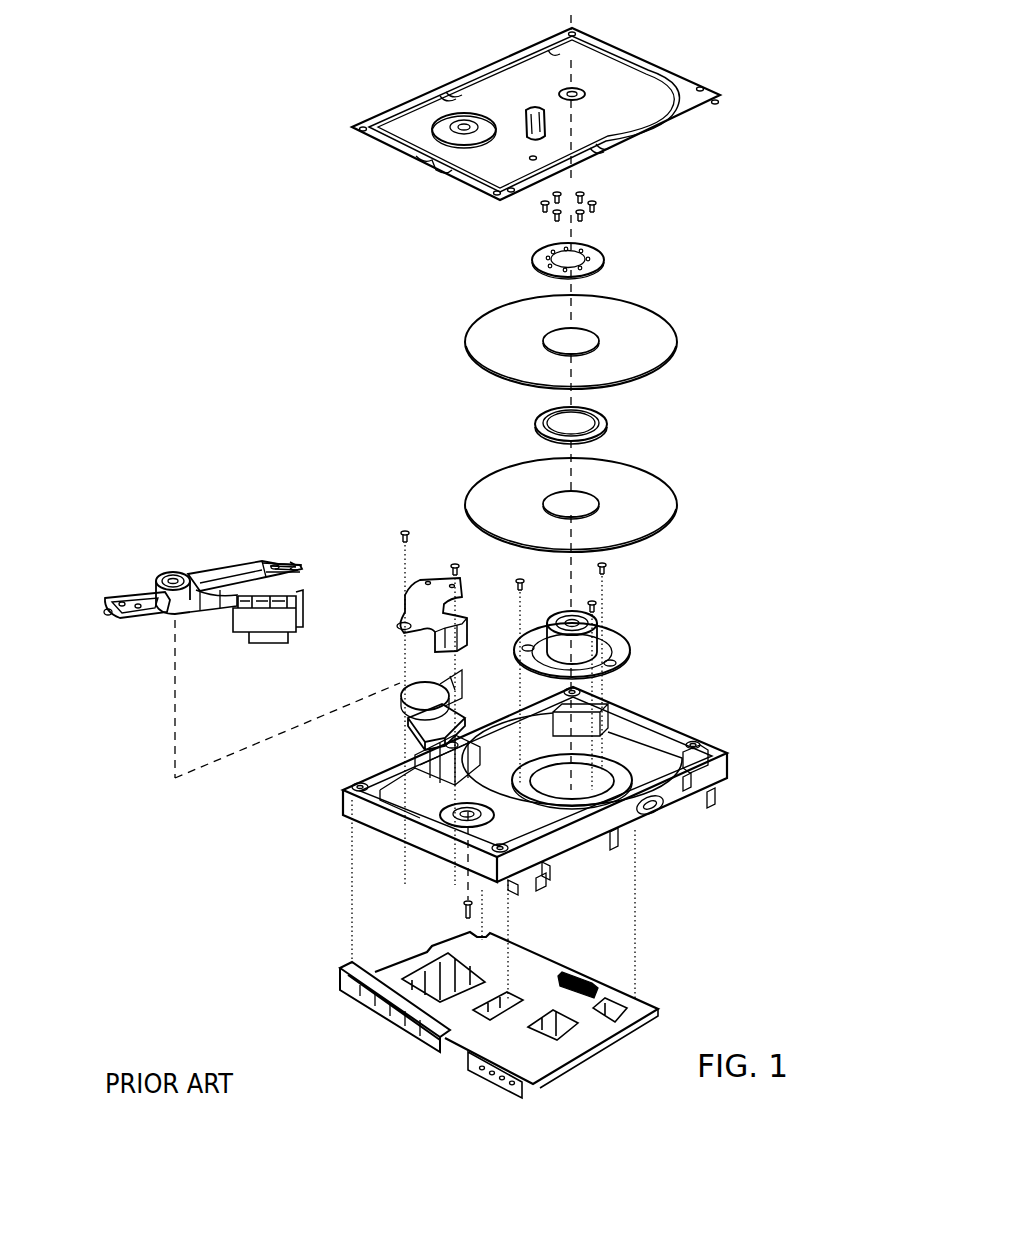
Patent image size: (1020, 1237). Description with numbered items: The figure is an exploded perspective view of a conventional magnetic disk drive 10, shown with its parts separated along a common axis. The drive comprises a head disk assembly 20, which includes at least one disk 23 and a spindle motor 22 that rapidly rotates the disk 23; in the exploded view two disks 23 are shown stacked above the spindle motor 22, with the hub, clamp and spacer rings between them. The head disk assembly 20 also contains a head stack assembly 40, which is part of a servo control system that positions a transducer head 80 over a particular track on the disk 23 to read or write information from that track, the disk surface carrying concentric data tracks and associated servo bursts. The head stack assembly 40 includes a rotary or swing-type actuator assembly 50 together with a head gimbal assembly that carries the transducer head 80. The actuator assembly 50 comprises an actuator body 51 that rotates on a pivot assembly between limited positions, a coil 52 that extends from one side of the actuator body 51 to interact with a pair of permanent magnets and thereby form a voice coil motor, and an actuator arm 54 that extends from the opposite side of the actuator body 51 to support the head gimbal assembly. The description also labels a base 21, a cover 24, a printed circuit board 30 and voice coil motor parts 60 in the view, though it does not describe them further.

The disk drive 10 is at (238, 132).
The head disk assembly 20 is at (765, 3).
The base 21 is at (713, 753).
The spindle motor 22 is at (618, 640).
The disk 23 is at (663, 320).
The cover 24 is at (685, 73).
The printed circuit board assembly 30 is at (572, 1060).
The head stack assembly 40 is at (80, 500).
The actuator assembly 50 is at (230, 631).
The actuator body 51 is at (170, 575).
The coil 52 is at (113, 594).
The actuator arm 54 is at (200, 575).
The voice coil motor yoke 60 is at (415, 695).
The transducer head 80 is at (262, 570).